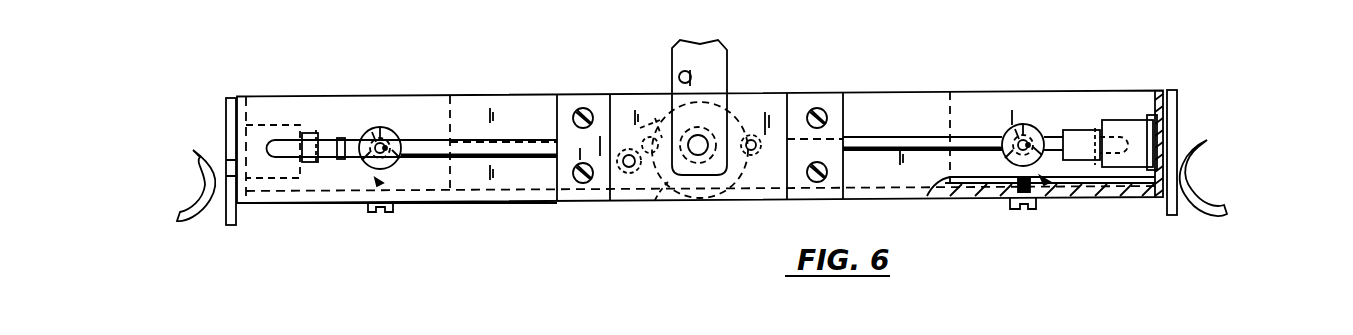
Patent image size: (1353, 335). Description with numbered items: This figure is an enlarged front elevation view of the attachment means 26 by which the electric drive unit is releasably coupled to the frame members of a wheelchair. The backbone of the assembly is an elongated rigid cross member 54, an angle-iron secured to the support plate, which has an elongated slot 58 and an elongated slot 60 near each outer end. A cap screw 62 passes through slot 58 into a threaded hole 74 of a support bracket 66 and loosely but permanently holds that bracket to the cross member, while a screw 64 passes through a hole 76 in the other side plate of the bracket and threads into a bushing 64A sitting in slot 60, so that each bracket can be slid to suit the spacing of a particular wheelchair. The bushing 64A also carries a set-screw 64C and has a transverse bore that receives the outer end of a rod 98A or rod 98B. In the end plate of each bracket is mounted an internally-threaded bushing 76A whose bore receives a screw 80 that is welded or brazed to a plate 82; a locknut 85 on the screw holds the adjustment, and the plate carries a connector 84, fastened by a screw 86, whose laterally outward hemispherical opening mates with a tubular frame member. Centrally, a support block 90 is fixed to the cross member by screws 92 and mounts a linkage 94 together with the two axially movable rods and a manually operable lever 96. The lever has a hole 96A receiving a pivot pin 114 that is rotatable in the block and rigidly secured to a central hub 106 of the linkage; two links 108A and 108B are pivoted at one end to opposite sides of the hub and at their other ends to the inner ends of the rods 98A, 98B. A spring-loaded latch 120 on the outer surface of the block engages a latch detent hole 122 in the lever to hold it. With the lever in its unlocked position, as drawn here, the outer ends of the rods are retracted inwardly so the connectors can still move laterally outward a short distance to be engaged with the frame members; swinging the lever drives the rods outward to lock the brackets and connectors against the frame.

The attachment means 26 is at (858, 65).
The cross member 54 is at (530, 95).
The elongated slot 58 is at (262, 208).
The elongated slot 60 is at (283, 142).
The cap screw 62 is at (392, 209).
The cap screw 64 is at (363, 132).
The bushing 64A is at (390, 146).
The set-screw 64C is at (378, 128).
The support bracket 66 is at (455, 97).
The threaded hole 74 is at (382, 181).
The hole 76 is at (405, 130).
The internally-threaded bushing 76A is at (266, 122).
The screw 80 is at (335, 160).
The plate 82 is at (226, 104).
The connector 84 is at (200, 150).
The locknut 85 is at (316, 130).
The screw 86 is at (222, 168).
The support block 90 is at (738, 128).
The screws 92 is at (583, 108).
The linkage 94 is at (765, 92).
The lever 96 is at (727, 56).
The hole 96A is at (712, 160).
The rod 98A is at (535, 160).
The rod 98B is at (857, 136).
The central hub 106 is at (660, 200).
The link 108A is at (668, 130).
The link 108B is at (737, 190).
The pivot pin 114 is at (705, 140).
The spring-loaded latch 120 is at (628, 168).
The latch detent hole 122 is at (682, 73).